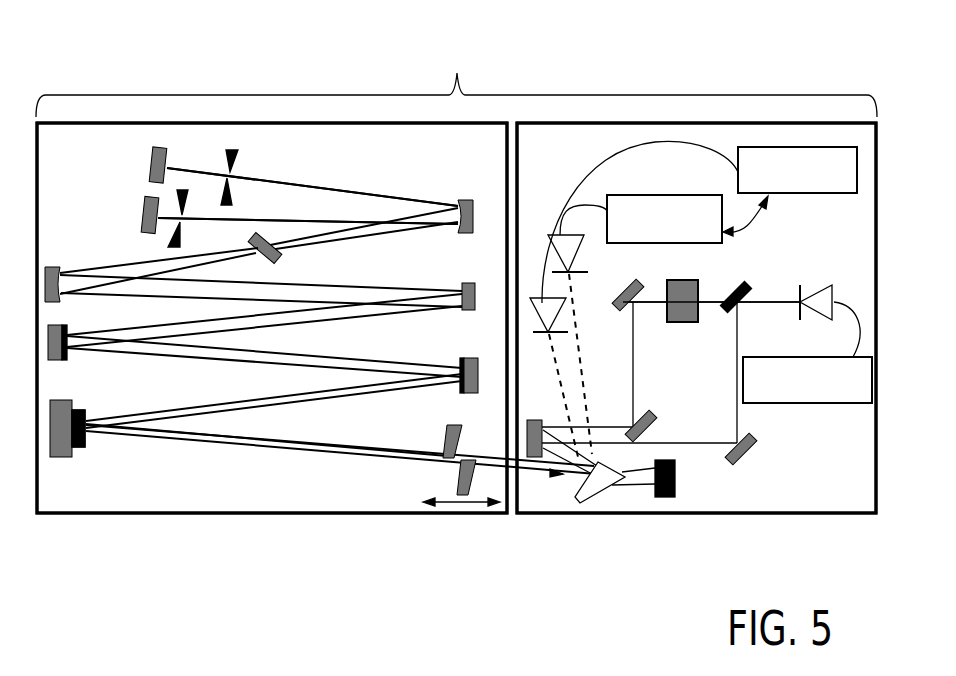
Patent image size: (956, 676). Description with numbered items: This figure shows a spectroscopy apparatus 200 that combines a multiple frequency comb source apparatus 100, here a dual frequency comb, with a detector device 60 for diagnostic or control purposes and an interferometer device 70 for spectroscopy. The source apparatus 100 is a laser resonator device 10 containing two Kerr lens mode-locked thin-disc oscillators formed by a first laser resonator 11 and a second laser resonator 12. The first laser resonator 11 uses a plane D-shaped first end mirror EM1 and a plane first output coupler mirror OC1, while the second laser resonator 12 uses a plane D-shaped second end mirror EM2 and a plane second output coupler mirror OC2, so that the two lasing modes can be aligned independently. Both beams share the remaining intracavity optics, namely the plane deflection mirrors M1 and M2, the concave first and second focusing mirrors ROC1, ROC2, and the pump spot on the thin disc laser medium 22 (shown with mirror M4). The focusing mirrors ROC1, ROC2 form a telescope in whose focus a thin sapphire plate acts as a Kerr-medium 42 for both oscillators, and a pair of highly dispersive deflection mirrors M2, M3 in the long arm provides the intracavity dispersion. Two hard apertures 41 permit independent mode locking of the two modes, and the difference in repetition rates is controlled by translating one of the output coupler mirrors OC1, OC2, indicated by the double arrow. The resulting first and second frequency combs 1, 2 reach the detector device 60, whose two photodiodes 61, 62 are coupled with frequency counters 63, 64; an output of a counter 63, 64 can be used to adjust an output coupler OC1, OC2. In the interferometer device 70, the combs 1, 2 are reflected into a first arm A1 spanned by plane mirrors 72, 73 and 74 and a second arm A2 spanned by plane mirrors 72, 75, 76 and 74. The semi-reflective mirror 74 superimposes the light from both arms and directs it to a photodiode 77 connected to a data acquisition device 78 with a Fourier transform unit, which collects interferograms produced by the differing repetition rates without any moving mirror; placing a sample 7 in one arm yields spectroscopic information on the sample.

The spectroscopy apparatus 200 is at (479, 58).
The multiple frequency comb source apparatus 100 is at (262, 478).
The laser resonator device 10 is at (399, 352).
The first laser resonator 11 is at (352, 192).
The second laser resonator 12 is at (288, 221).
The hard aperture 41 is at (234, 173).
The Kerr-medium 42 is at (280, 251).
The thin disc laser medium 22 is at (87, 440).
The first frequency comb 1 is at (494, 463).
The second frequency comb 2 is at (527, 457).
The detector device 60 is at (683, 187).
The photodiode 61 is at (558, 316).
The photodiode 62 is at (560, 243).
The frequency counter 63 is at (797, 171).
The frequency counter 64 is at (687, 220).
The sample 7 is at (682, 301).
The interferometer device 70 is at (790, 346).
The plane mirror 72 is at (558, 431).
The plane mirror 73 is at (753, 455).
The semi-reflective mirror 74 is at (751, 288).
The plane mirror 75 is at (656, 428).
The plane mirror 76 is at (622, 311).
The photodiode 77 is at (832, 292).
The data acquisition device 78 is at (807, 380).
The first arm A1 is at (737, 413).
The second arm A2 is at (633, 343).
The first end mirror EM1 is at (278, 172).
The second end mirror EM2 is at (273, 211).
The first focusing mirror ROC1 is at (379, 212).
The second focusing mirror ROC2 is at (78, 268).
The first deflection mirror M1 is at (482, 282).
The second deflection mirror M2 is at (75, 363).
The deflection mirror M3 is at (480, 361).
The mirror M4 is at (76, 450).
The first output coupler mirror OC1 is at (452, 483).
The second output coupler mirror OC2 is at (428, 439).